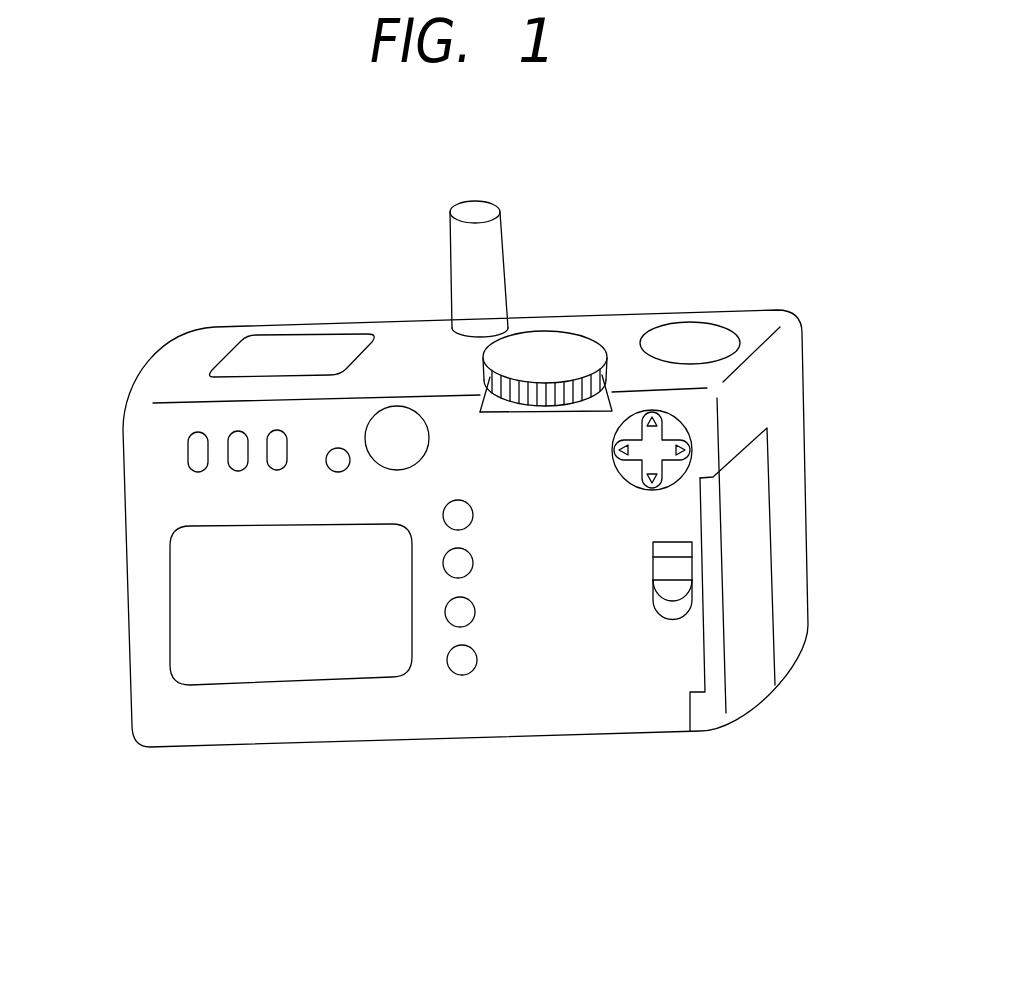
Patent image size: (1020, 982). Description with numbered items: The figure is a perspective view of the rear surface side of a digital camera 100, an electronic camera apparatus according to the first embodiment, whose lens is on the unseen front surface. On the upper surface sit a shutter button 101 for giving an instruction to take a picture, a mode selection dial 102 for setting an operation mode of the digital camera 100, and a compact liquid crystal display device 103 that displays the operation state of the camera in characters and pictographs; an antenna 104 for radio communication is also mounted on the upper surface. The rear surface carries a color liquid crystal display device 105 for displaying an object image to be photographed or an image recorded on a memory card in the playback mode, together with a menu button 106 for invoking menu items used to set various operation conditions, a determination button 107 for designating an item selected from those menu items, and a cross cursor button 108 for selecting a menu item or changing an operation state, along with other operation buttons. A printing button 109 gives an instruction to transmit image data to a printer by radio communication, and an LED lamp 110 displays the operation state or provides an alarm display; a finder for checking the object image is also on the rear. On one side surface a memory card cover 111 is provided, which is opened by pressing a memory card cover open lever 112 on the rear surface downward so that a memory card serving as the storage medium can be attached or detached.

The digital camera 100 is at (790, 362).
The shutter button 101 is at (700, 332).
The mode selection dial 102 is at (560, 340).
The compact liquid crystal display device 103 is at (330, 345).
The antenna 104 is at (480, 207).
The color liquid crystal display device 105 is at (232, 677).
The menu button 106 is at (468, 567).
The determination button 107 is at (468, 615).
The cross cursor button 108 is at (632, 475).
The printing button 109 is at (188, 450).
The LED lamp 110 is at (327, 467).
The memory card cover 111 is at (762, 490).
The memory card cover open lever 112 is at (673, 613).